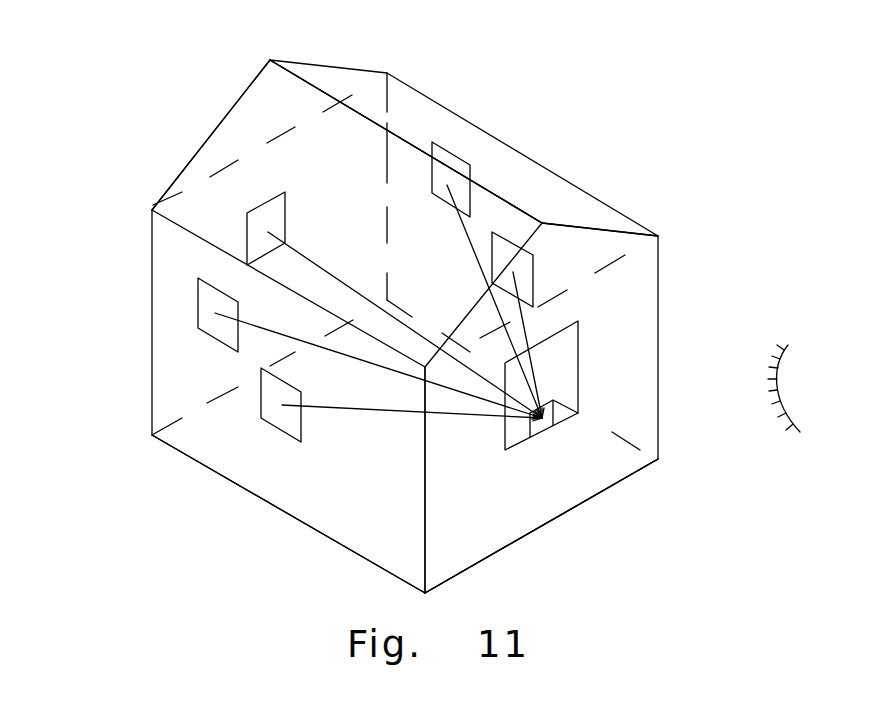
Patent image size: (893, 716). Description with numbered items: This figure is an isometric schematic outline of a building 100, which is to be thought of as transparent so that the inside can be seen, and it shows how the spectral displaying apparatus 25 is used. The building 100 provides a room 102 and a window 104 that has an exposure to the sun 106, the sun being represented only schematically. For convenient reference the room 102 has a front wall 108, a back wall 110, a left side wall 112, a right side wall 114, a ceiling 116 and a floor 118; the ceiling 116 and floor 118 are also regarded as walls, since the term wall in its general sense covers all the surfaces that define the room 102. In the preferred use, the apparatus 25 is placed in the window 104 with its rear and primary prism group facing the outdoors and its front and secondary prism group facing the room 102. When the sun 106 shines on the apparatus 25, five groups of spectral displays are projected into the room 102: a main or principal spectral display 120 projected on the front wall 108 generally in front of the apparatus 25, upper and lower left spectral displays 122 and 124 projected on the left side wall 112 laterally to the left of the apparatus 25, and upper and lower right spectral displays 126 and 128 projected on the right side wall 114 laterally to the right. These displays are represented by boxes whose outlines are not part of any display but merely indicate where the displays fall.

The building 100 is at (327, 62).
The room 102 is at (490, 508).
The window 104 is at (563, 427).
The sun 106 is at (797, 440).
The front wall 108 is at (177, 248).
The back wall 110 is at (627, 280).
The left side wall 112 is at (327, 472).
The right side wall 114 is at (605, 288).
The ceiling 116 is at (227, 207).
The floor 118 is at (530, 502).
The main spectral display 120 is at (263, 218).
The upper left spectral display 122 is at (218, 325).
The lower left spectral display 124 is at (285, 415).
The upper right spectral display 126 is at (452, 158).
The lower right spectral display 128 is at (505, 250).
The spectral displaying apparatus 25 is at (555, 402).